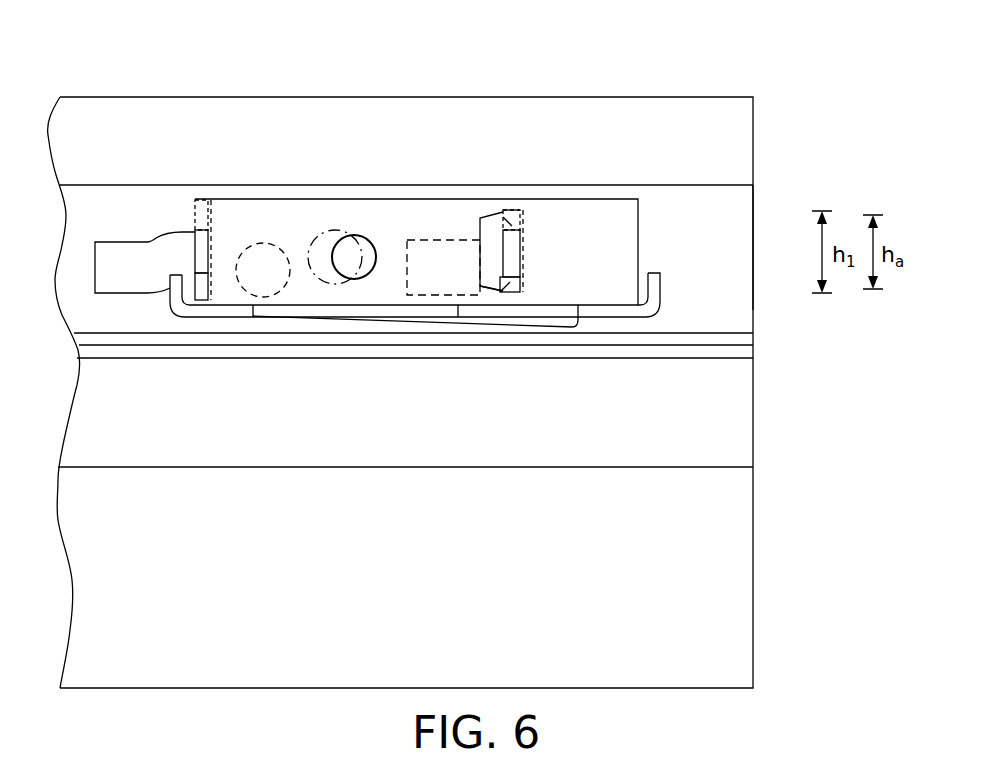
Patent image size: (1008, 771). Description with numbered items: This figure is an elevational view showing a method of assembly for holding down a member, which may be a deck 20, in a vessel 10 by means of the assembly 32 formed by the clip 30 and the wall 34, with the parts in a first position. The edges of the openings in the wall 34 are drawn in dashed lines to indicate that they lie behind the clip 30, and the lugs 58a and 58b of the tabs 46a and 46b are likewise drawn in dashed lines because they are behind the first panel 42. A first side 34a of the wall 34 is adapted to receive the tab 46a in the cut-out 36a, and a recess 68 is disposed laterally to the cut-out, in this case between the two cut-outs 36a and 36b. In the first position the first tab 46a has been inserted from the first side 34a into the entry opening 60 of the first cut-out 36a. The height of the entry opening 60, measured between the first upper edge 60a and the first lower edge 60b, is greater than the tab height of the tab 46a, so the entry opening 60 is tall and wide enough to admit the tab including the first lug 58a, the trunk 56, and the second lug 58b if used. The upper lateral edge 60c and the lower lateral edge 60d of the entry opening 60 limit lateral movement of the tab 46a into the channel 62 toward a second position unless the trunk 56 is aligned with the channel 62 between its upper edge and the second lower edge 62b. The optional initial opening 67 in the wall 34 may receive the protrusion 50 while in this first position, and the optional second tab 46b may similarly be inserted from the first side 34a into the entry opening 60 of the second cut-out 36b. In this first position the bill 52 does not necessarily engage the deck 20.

The vessel 10 is at (772, 566).
The deck 20 is at (742, 340).
The clip 30 is at (381, 231).
The assembly 32 is at (770, 221).
The wall 34 is at (228, 531).
The first side 34a is at (136, 151).
The first cut-out 36a is at (408, 240).
The second cut-out 36b is at (140, 296).
The first panel 42 is at (469, 178).
The first tab 46a is at (523, 250).
The second tab 46b is at (188, 200).
The protrusion 50 is at (352, 237).
The bill 52 is at (303, 331).
The trunk 56 is at (523, 261).
The first lug 58a is at (203, 215).
The second lug 58b is at (201, 282).
The entry opening 60 is at (521, 292).
The first upper edge 60a is at (480, 217).
The first lower edge 60b is at (506, 293).
The upper lateral edge 60c is at (505, 216).
The lower lateral edge 60d is at (495, 291).
The channel 62 is at (420, 262).
The second lower edge 62b is at (497, 286).
The initial opening 67 is at (327, 233).
The recess 68 is at (270, 243).